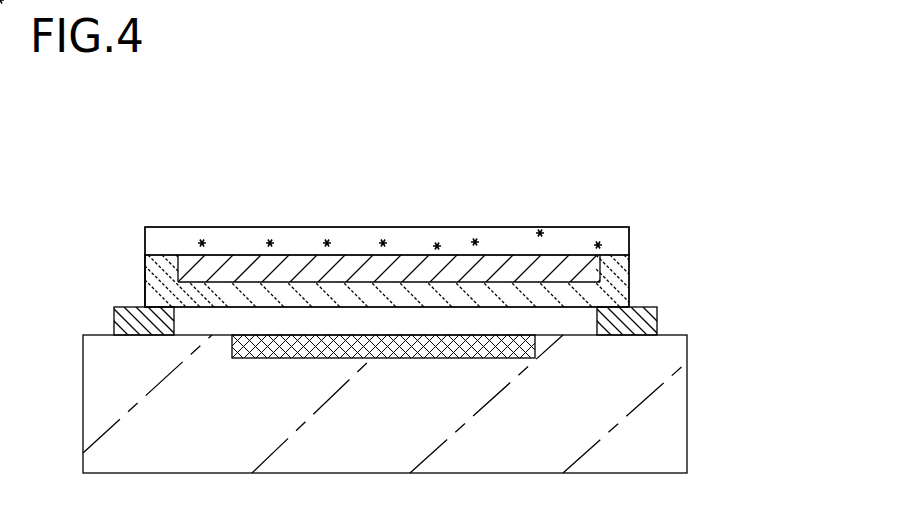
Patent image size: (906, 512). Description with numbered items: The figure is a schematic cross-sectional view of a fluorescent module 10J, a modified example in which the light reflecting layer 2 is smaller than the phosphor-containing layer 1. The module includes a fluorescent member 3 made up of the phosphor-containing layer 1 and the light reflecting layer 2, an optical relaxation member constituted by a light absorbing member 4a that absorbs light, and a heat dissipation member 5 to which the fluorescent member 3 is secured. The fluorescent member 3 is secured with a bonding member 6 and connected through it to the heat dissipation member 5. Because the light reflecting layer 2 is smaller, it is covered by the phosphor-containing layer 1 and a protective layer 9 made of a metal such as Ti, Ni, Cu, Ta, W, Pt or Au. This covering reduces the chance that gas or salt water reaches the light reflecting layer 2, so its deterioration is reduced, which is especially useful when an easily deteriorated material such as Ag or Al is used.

The phosphor-containing layer 1 is at (415, 245).
The light reflecting layer 2 is at (490, 270).
The fluorescent member 3 is at (488, 146).
The light absorbing member 4a is at (270, 347).
The heat dissipation member 5 is at (663, 417).
The bonding member 6 is at (647, 323).
The protective layer 9 is at (147, 270).
The fluorescent module 10J is at (655, 215).